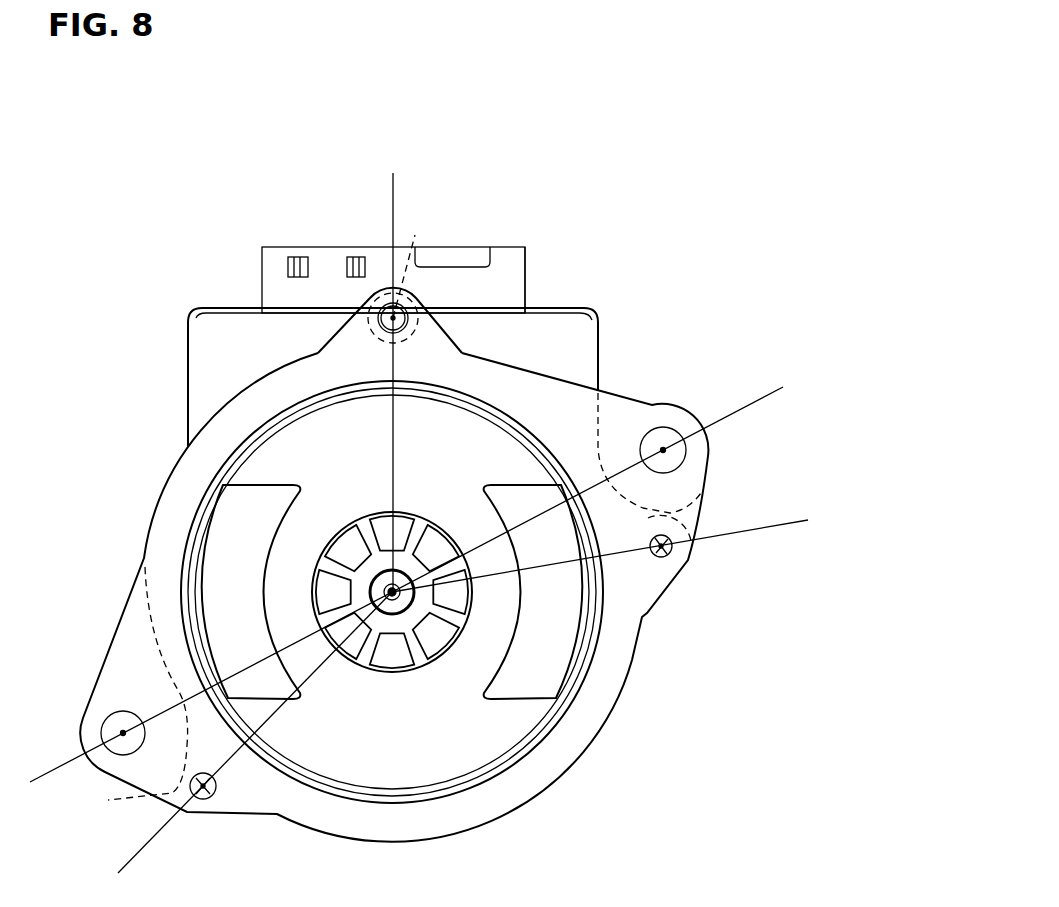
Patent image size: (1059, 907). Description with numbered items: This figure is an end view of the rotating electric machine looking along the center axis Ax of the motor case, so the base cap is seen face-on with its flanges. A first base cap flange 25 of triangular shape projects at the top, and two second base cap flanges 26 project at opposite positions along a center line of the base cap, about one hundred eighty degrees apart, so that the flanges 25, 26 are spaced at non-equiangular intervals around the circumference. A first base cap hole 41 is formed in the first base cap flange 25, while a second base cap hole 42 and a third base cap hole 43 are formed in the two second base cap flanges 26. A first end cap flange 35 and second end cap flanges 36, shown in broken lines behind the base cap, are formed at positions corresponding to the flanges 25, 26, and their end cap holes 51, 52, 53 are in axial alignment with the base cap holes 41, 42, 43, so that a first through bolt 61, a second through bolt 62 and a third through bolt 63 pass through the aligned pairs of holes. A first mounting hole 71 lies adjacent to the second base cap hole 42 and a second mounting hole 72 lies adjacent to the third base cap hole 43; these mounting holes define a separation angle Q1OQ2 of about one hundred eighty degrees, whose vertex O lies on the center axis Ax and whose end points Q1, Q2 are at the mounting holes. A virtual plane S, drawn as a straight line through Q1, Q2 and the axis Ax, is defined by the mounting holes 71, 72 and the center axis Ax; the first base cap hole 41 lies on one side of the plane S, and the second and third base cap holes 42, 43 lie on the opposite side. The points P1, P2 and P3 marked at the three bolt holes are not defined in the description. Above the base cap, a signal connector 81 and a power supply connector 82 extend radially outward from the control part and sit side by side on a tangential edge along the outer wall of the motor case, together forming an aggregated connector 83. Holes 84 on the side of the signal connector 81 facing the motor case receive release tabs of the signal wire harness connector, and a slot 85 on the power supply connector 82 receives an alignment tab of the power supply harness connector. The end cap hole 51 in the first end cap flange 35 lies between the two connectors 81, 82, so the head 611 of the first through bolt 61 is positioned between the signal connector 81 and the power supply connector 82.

The first base cap flange 25 is at (363, 333).
The second base cap flange 26 is at (128, 657).
The first end cap flange 35 is at (420, 297).
The second end cap flange 36 is at (703, 487).
The first base cap hole 41 is at (387, 328).
The second base cap hole 42 is at (673, 550).
The third base cap hole 43 is at (210, 793).
The end cap hole 51 is at (400, 330).
The end cap hole 52 is at (687, 522).
The end cap hole 53 is at (195, 793).
The first through bolt 61 is at (388, 313).
The head 611 is at (414, 258).
The through bolt 62 is at (673, 548).
The through bolt 63 is at (200, 795).
The first mounting hole 71 is at (648, 432).
The second mounting hole 72 is at (107, 727).
The signal connector 81 is at (273, 252).
The power supply connector 82 is at (495, 253).
The aggregated connector 83 is at (381, 247).
The holes 84 is at (298, 257).
The slot 85 is at (453, 267).
The angle vertex O is at (388, 589).
The center axis Ax is at (408, 598).
The virtual plane S is at (57, 767).
The first fastening point P1 is at (407, 369).
The second fastening point P2 is at (663, 552).
The third fastening point P3 is at (203, 795).
The separation angle point Q1 is at (663, 448).
The separation angle point Q2 is at (121, 731).